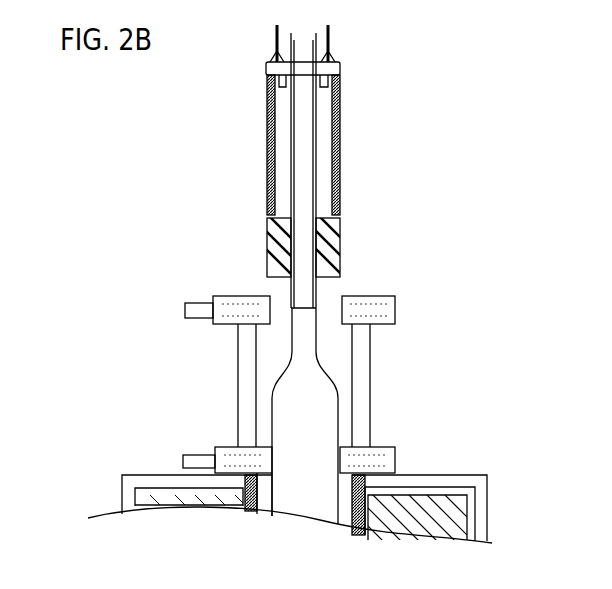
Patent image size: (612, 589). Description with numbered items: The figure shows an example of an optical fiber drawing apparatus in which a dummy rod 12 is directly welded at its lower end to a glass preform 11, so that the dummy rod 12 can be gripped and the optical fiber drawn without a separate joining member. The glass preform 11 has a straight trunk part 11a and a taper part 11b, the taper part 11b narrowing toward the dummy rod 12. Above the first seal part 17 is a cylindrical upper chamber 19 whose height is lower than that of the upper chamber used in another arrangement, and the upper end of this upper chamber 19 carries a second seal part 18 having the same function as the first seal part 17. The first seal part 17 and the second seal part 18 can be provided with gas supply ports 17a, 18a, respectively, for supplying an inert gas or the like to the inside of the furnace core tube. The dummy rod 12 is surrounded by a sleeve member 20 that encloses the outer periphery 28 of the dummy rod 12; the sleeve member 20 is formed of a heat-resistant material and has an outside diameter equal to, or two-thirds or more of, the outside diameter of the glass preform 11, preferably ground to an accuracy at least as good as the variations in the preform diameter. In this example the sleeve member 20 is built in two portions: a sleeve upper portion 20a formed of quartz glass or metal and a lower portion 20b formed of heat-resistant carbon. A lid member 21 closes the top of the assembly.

The glass preform 11 is at (312, 416).
The straight trunk part 11a is at (339, 425).
The taper part 11b is at (275, 386).
The dummy rod 12 is at (308, 140).
The first seal part 17 is at (293, 447).
The gas supply port 17a is at (183, 457).
The second seal part 18 is at (283, 300).
The gas supply port 18a is at (186, 310).
The upper chamber 19 is at (238, 406).
The sleeve member 20 is at (310, 179).
The sleeve upper portion 20a is at (342, 175).
The lower portion 20b is at (345, 254).
The lid member 21 is at (265, 66).
The outer periphery 28 is at (318, 117).